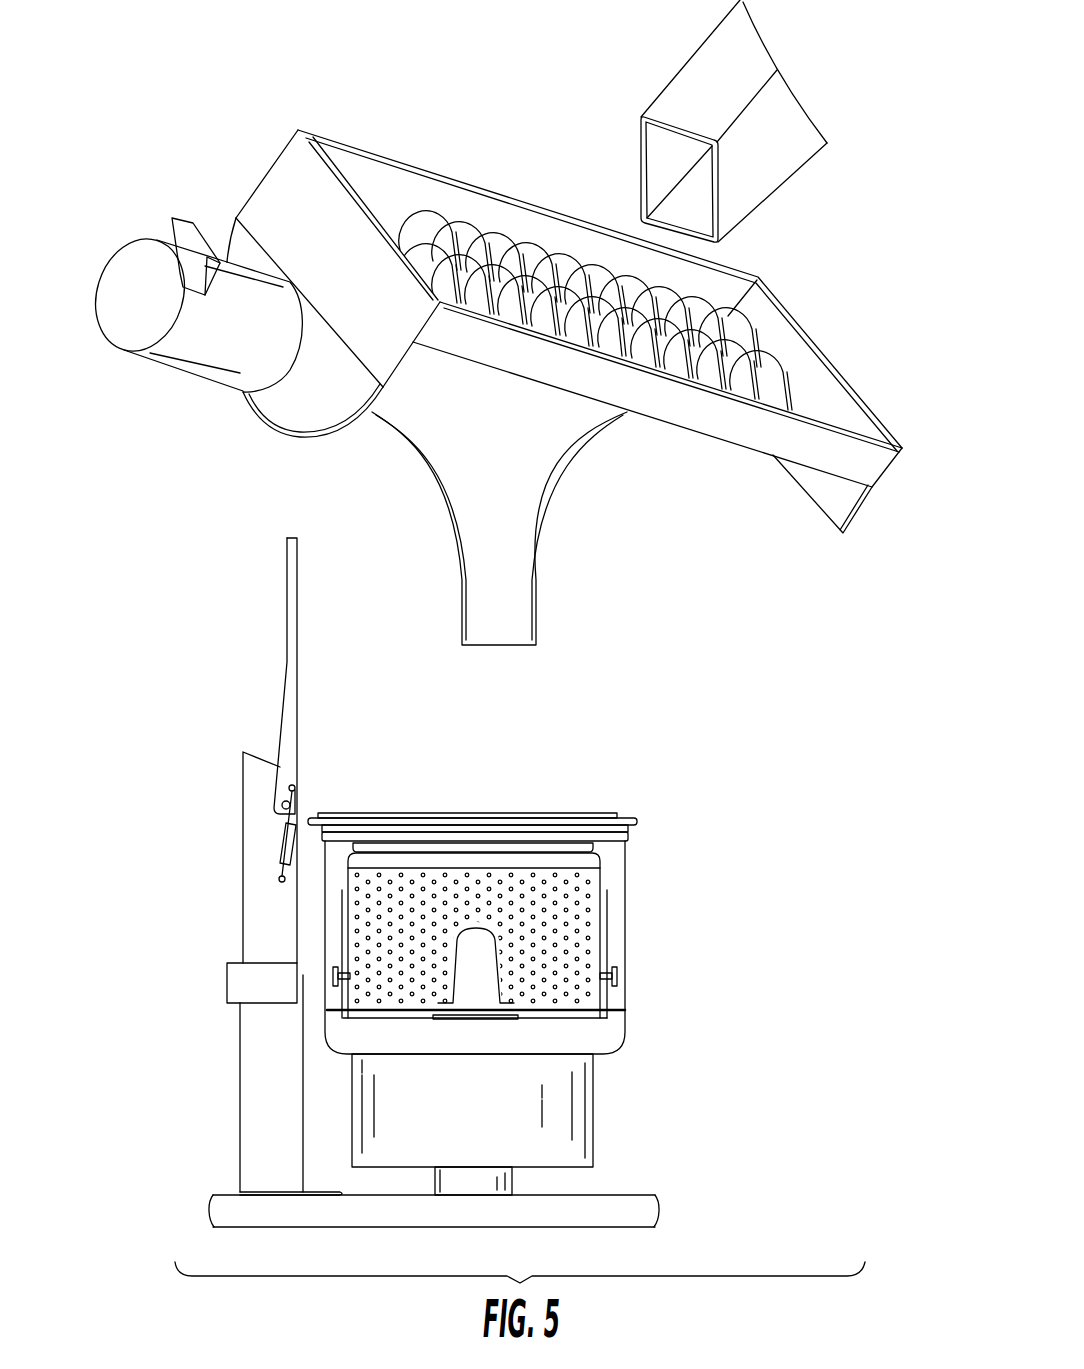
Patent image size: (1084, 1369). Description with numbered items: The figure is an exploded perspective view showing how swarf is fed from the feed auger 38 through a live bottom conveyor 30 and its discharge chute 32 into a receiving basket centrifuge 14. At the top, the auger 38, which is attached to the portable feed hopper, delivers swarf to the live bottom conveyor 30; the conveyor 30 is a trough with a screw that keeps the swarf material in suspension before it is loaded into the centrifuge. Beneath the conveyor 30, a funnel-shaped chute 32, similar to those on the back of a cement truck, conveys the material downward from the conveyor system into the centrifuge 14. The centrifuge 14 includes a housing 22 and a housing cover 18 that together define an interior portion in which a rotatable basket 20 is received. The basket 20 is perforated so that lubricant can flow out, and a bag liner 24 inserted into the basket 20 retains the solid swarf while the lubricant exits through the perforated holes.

The basket centrifuge 14 is at (485, 882).
The housing cover 18 is at (287, 655).
The rotatable basket 20 is at (503, 860).
The housing 22 is at (628, 925).
The bag liner 24 is at (445, 873).
The live bottom conveyor 30 is at (492, 390).
The chute 32 is at (517, 608).
The auger 38 is at (790, 163).